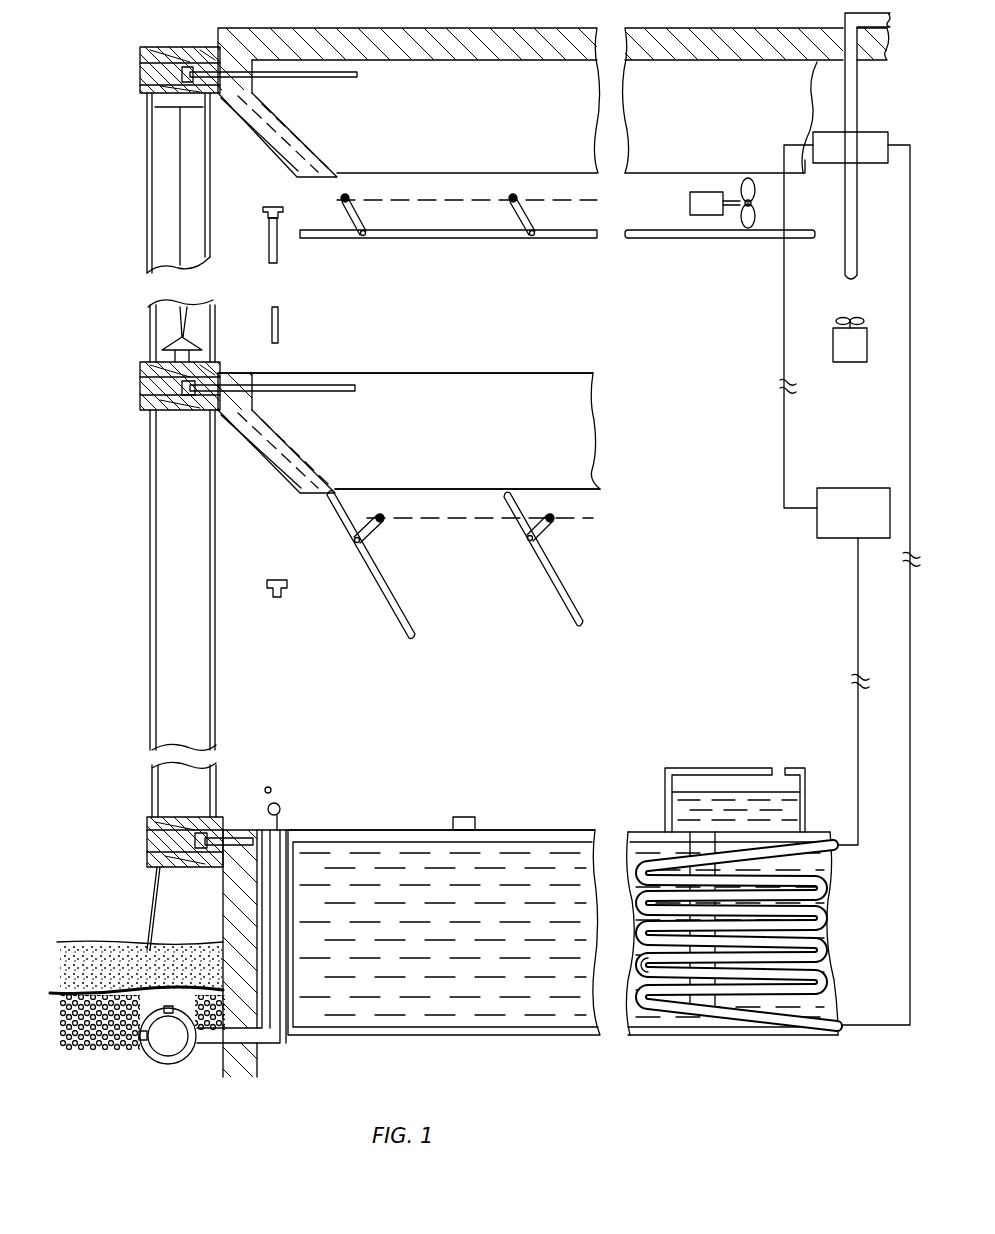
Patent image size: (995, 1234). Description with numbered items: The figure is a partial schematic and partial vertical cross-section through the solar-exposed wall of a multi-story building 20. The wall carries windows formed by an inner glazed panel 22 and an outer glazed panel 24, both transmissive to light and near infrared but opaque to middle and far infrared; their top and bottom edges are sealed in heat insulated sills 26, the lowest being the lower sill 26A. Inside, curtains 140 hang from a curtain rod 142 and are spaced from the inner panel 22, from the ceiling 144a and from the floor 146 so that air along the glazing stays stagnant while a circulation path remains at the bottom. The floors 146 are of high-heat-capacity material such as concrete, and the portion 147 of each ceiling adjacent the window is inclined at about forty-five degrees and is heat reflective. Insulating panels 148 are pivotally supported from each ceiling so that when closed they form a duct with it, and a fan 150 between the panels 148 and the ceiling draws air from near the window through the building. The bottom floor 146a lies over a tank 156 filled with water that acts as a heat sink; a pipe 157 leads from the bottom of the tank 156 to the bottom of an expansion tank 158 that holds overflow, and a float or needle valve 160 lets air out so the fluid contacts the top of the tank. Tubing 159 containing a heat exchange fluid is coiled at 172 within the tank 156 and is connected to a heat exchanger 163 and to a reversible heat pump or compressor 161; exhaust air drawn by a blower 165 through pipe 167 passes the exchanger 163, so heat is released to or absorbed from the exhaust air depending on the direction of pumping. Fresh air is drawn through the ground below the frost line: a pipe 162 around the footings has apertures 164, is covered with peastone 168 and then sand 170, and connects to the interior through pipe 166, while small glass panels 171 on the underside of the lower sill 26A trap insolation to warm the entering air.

The building 20 is at (128, 237).
The inner glazed panel 22 is at (205, 182).
The outer glazed panel 24 is at (147, 190).
The heat insulated sills 26 is at (140, 52).
The lower sill 26A is at (147, 856).
The curtains 140 is at (277, 307).
The curtain rod 142 is at (263, 210).
The louver pivot axis 144a is at (597, 200).
The floor 146 is at (515, 373).
The bottom floor 146a is at (415, 830).
The portion of the ceiling 147 is at (312, 177).
The insulating panels 148 is at (465, 238).
The fan 150 is at (708, 210).
The tank 156 is at (512, 845).
The pipe 157 is at (682, 987).
The expansion tank 158 is at (683, 768).
The tubing 159 is at (645, 835).
The float or needle valve 160 is at (470, 817).
The reversible heat pump or compressor 161 is at (845, 530).
The pipe 162 is at (170, 1040).
The heat exchanger 163 is at (850, 578).
The apertures 164 is at (175, 1008).
The blower 165 is at (848, 355).
The pipe 166 is at (282, 935).
The pipe 167 is at (845, 197).
The peastone 168 is at (142, 1022).
The sand 170 is at (135, 967).
The small glass panels 171 is at (157, 905).
The coil 172 is at (645, 965).